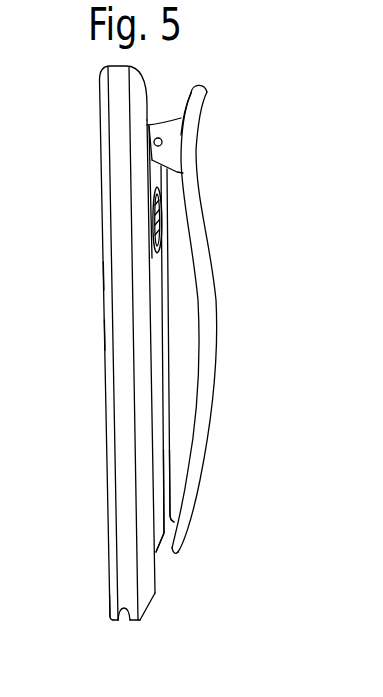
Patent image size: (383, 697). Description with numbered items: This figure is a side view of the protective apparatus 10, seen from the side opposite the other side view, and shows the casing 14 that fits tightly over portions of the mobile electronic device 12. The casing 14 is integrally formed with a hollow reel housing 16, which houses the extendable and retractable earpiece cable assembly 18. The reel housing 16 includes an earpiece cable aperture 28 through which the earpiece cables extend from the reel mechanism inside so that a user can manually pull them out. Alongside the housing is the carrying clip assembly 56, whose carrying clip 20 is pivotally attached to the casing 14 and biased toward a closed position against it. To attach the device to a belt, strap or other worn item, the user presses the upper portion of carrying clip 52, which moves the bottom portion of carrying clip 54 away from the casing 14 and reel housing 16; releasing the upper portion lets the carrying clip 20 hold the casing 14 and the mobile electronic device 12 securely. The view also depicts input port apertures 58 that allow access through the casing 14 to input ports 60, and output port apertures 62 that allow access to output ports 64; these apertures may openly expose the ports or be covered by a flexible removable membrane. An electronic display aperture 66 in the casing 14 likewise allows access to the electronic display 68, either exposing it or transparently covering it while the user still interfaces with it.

The protective apparatus 10 is at (142, 357).
The mobile electronic device 12 is at (138, 257).
The casing 14 is at (155, 593).
The reel housing 16 is at (159, 339).
The earpiece cable assembly 18 is at (160, 458).
The carrying clip 20 is at (219, 300).
The earpiece cable aperture 28 is at (149, 194).
The upper portion of carrying clip 52 is at (205, 102).
The bottom portion of carrying clip 54 is at (178, 540).
The carrying clip assembly 56 is at (186, 96).
The input port apertures 58 is at (111, 607).
The input ports 60 is at (125, 621).
The output port apertures 62 is at (139, 621).
The output ports 64 is at (118, 621).
The electronic display aperture 66 is at (102, 276).
The electronic display 68 is at (105, 333).